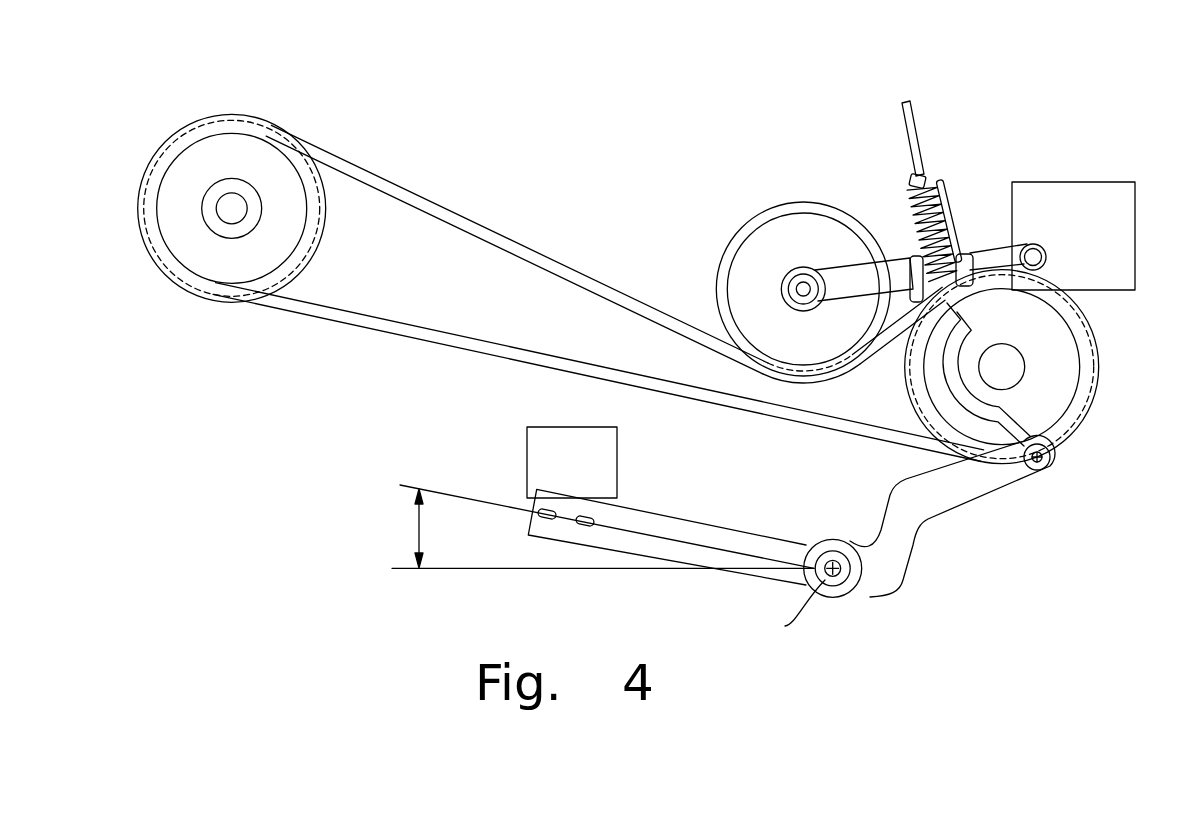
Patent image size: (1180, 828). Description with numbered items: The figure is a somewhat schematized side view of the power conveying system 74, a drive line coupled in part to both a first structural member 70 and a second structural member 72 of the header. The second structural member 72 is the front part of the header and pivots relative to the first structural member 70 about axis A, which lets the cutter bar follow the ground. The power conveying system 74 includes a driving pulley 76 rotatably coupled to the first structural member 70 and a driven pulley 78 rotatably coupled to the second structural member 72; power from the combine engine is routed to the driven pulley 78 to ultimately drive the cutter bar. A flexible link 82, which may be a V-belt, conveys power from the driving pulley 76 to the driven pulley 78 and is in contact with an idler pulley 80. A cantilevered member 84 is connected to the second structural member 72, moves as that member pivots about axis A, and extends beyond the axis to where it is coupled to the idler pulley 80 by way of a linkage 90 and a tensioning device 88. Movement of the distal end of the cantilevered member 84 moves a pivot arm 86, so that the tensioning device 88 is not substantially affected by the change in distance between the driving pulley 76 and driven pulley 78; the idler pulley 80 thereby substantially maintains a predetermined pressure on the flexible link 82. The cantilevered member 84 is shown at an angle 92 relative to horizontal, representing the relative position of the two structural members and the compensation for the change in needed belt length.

The first structural member 70 is at (1094, 231).
The second structural member 72 is at (590, 470).
The power conveying system 74 is at (598, 130).
The driving pulley 76 is at (903, 380).
The driven pulley 78 is at (322, 250).
The idler pulley 80 is at (762, 203).
The flexible link 82 is at (523, 243).
The cantilevered member 84 is at (915, 548).
The pivot arm 86 is at (987, 247).
The tensioning device 88 is at (936, 180).
The linkage 90 is at (990, 413).
The angle 92 is at (415, 528).